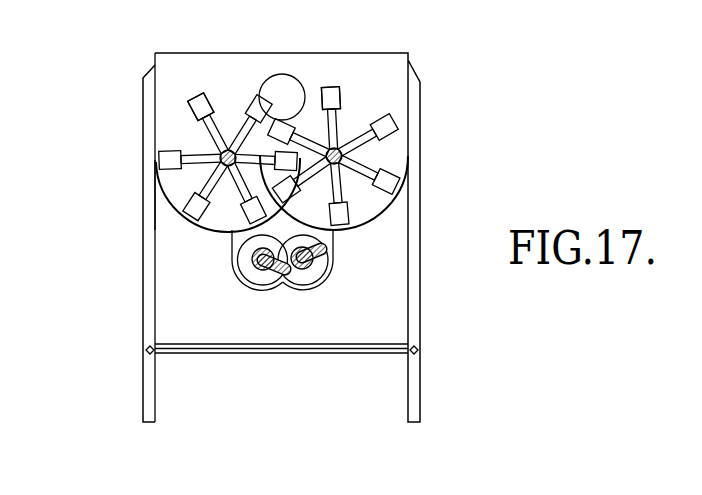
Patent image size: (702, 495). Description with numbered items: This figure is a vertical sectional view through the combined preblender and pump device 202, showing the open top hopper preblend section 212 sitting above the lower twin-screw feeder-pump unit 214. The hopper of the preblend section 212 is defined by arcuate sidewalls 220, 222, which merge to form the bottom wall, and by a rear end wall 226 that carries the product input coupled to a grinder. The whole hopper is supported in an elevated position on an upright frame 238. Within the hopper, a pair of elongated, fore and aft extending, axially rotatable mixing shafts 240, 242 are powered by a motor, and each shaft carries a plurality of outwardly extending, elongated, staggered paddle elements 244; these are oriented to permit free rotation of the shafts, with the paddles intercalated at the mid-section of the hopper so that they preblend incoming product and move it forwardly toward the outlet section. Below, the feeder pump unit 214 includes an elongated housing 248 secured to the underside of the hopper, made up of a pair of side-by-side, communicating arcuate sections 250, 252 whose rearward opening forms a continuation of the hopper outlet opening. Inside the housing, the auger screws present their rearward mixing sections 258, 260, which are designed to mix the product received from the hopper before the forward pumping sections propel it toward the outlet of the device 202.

The combined preblender and pump device 202 is at (470, 124).
The hopper preblend section 212 is at (122, 154).
The twin-screw feeder-pump unit 214 is at (249, 313).
The arcuate sidewall 220 is at (408, 57).
The arcuate sidewall 222 is at (155, 58).
The rear end wall 226 is at (270, 60).
The upright frame 238 is at (114, 321).
The mixing shaft 240 is at (229, 148).
The mixing shaft 242 is at (352, 140).
The paddle elements 244 is at (195, 98).
The housing 248 is at (328, 282).
The arcuate section 250 is at (242, 280).
The arcuate section 252 is at (312, 290).
The rearward mixing section 258 is at (249, 253).
The rearward mixing section 260 is at (320, 268).